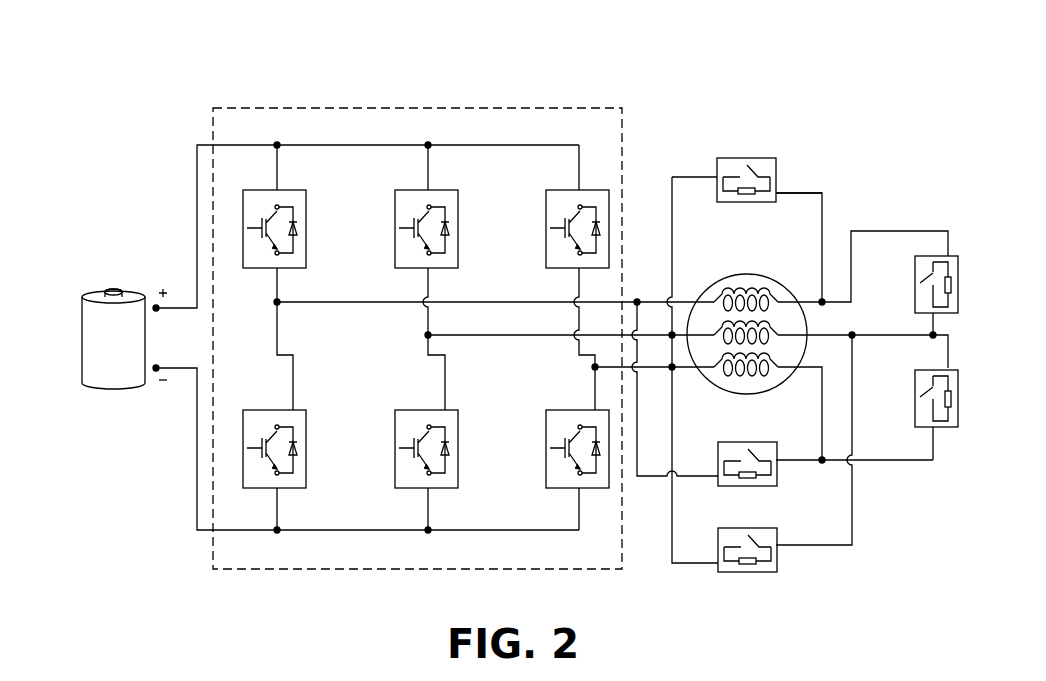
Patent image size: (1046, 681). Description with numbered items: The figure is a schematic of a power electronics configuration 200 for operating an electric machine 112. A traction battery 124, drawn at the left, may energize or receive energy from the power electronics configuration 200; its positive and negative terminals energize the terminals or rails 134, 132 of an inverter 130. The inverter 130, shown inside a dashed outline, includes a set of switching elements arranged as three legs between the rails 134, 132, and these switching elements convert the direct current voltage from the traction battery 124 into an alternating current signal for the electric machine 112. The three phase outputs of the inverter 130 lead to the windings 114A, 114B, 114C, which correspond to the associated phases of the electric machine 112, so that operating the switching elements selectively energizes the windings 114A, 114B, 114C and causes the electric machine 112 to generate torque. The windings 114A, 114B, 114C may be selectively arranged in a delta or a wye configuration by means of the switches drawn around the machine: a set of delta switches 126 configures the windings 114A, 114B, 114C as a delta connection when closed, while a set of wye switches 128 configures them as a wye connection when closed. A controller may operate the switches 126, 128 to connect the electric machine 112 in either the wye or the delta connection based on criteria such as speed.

The power electronics configuration 200 is at (705, 62).
The inverter 130 is at (422, 82).
The rail 134 is at (185, 228).
The rail 132 is at (185, 455).
The traction battery 124 is at (113, 290).
The delta switch 126 is at (753, 158).
The wye switch 128 is at (915, 268).
The electric machine 112 is at (763, 264).
The winding 114A is at (745, 290).
The winding 114B is at (775, 320).
The winding 114C is at (730, 378).